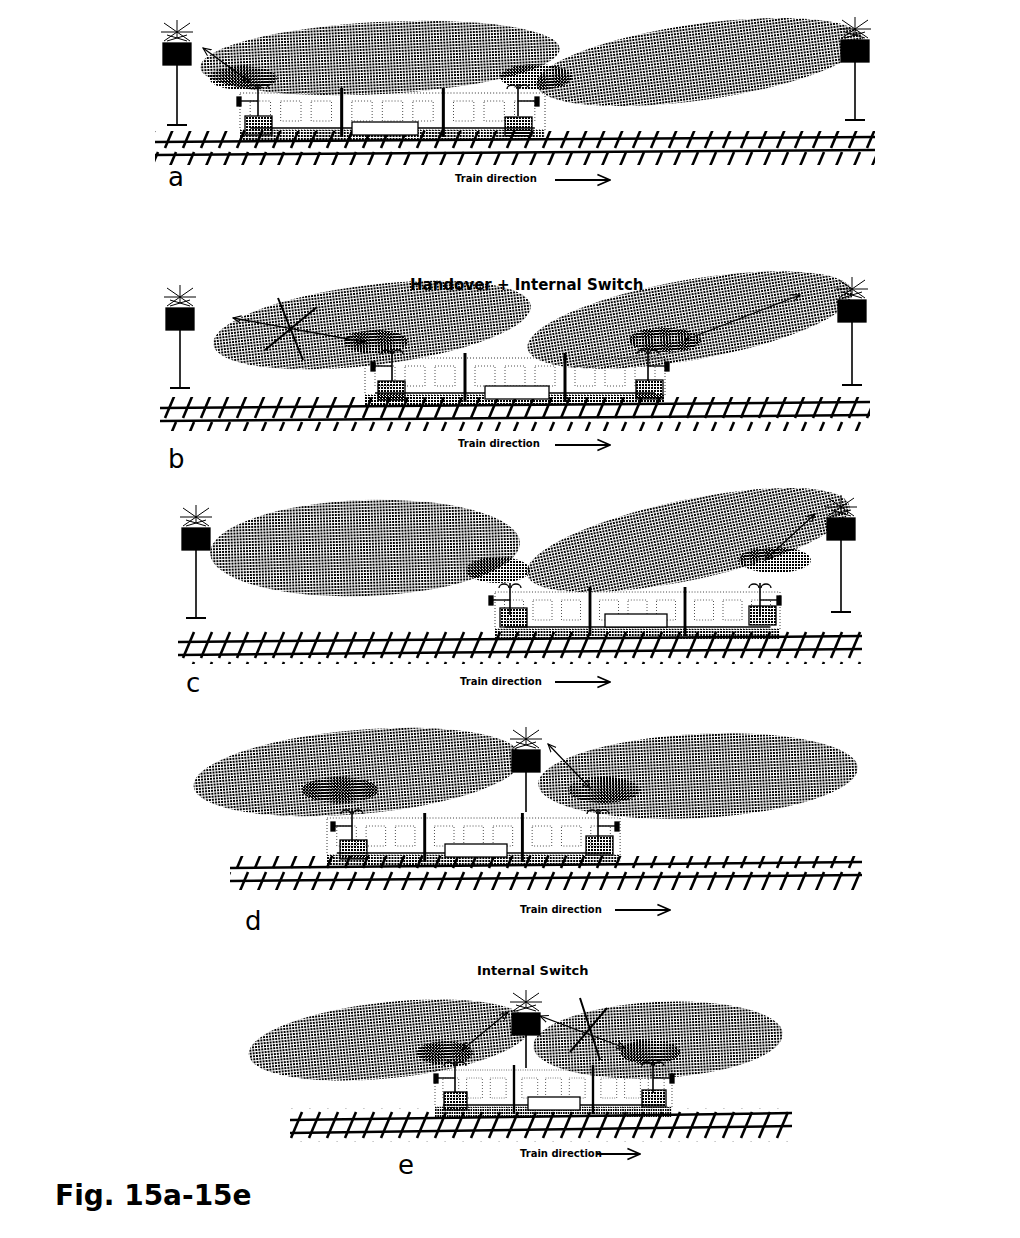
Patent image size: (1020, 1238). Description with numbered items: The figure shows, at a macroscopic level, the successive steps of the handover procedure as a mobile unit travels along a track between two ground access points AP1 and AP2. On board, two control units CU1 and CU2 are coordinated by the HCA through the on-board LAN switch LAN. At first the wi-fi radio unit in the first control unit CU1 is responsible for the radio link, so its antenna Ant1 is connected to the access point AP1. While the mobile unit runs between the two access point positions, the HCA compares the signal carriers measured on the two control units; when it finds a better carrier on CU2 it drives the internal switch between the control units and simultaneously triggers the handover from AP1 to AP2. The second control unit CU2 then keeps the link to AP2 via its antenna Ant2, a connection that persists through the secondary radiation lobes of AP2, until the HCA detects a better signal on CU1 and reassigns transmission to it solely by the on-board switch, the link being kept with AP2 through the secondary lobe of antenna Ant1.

In FIG. 15A, the access point AP1 is at (177, 72).
In FIG. 15B, the access point AP1 is at (180, 336).
In FIG. 15C, the access point AP1 is at (196, 561).
In FIG. 15A, the access point AP2 is at (855, 68).
In FIG. 15B, the access point AP2 is at (852, 331).
In FIG. 15C, the access point AP2 is at (841, 553).
In FIG. 15D, the access point AP2 is at (526, 769).
In FIG. 15E, the access point AP2 is at (526, 1029).
In FIG. 15A, the antenna Ant1 is at (244, 82).
In FIG. 15B, the antenna Ant1 is at (326, 349).
In FIG. 15C, the antenna Ant1 is at (506, 585).
In FIG. 15D, the antenna Ant1 is at (340, 809).
In FIG. 15E, the antenna Ant1 is at (462, 1052).
In FIG. 15A, the antenna Ant2 is at (527, 90).
In FIG. 15B, the antenna Ant2 is at (706, 338).
In FIG. 15C, the antenna Ant2 is at (767, 564).
In FIG. 15D, the antenna Ant2 is at (594, 792).
In FIG. 15E, the antenna Ant2 is at (613, 1054).
In FIG. 15A, the control unit CU1 is at (258, 125).
In FIG. 15B, the control unit CU1 is at (391, 390).
In FIG. 15C, the control unit CU1 is at (513, 617).
In FIG. 15D, the control unit CU1 is at (353, 849).
In FIG. 15E, the control unit CU1 is at (455, 1101).
In FIG. 15A, the control unit CU2 is at (518, 126).
In FIG. 15B, the control unit CU2 is at (649, 389).
In FIG. 15C, the control unit CU2 is at (762, 615).
In FIG. 15D, the control unit CU2 is at (599, 845).
In FIG. 15E, the control unit CU2 is at (654, 1098).
In FIG. 15A, the on-board LAN switch LAN is at (385, 128).
In FIG. 15B, the on-board LAN switch LAN is at (517, 392).
In FIG. 15C, the on-board LAN switch LAN is at (636, 620).
In FIG. 15D, the on-board LAN switch LAN is at (476, 850).
In FIG. 15E, the on-board LAN switch LAN is at (554, 1103).